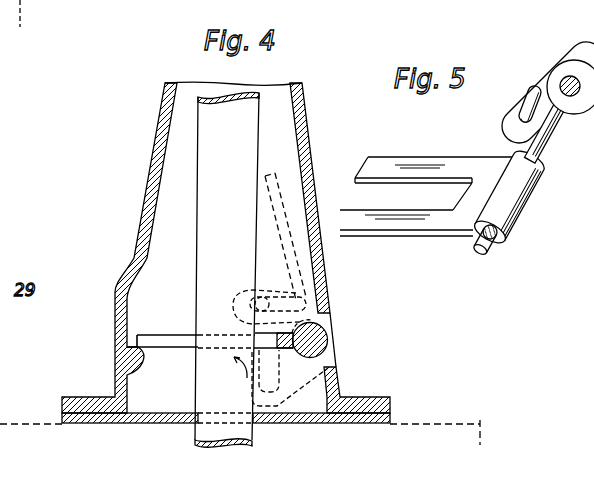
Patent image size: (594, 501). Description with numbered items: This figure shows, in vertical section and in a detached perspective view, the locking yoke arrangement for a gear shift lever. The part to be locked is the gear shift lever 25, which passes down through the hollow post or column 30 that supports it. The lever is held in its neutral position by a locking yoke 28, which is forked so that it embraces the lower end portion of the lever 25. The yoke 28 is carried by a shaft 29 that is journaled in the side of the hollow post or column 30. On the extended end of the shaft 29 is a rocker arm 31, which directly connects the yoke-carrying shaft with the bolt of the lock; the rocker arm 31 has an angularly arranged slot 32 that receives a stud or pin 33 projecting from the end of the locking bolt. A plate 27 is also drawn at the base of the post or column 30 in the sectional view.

In FIG. 4, the gear shift lever 25 is at (198, 151).
In FIG. 4, the base plate 27 is at (167, 413).
In FIG. 4, the locking yoke 28 is at (167, 335).
In FIG. 5, the locking yoke 28 is at (448, 222).
In FIG. 4, the shaft 29 is at (332, 341).
In FIG. 5, the shaft 29 is at (540, 149).
In FIG. 4, the hollow post or column 30 is at (145, 216).
In FIG. 4, the rocker arm 31 is at (290, 379).
In FIG. 5, the rocker arm 31 is at (507, 112).
In FIG. 4, the slot 32 is at (271, 384).
In FIG. 5, the slot 32 is at (536, 90).
In FIG. 4, the stud or pin 33 is at (288, 300).